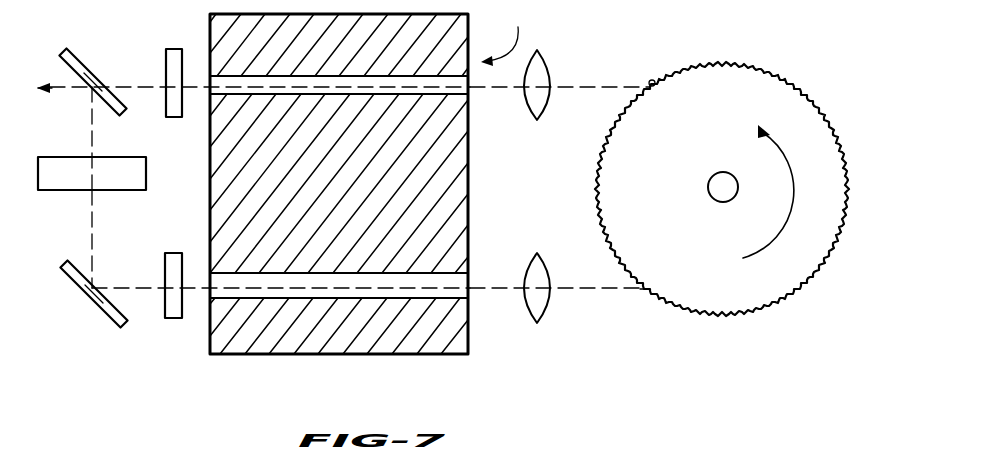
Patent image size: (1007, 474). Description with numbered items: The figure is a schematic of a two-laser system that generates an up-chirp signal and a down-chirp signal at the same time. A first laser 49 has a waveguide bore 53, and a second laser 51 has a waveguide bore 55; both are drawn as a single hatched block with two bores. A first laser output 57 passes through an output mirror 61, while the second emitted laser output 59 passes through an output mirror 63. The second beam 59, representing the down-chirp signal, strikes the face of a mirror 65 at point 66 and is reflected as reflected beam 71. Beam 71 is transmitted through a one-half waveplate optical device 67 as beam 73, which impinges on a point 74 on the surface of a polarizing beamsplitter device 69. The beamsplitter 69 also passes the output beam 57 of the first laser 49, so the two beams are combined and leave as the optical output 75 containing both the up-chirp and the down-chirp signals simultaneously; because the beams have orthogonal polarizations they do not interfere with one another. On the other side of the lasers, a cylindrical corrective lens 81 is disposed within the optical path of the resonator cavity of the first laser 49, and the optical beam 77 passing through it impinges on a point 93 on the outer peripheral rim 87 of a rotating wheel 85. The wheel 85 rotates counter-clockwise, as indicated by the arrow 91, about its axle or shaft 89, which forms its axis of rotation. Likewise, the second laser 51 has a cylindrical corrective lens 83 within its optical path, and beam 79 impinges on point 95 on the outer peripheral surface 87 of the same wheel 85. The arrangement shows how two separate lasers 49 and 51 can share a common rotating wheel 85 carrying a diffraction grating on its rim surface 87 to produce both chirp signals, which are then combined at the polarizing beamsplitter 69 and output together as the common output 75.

The first laser 49 is at (507, 36).
The second laser 51 is at (473, 296).
The waveguide bore 53 is at (380, 76).
The waveguide bore 55 is at (297, 297).
The first laser output 57 is at (133, 86).
The second emitted laser output 59 is at (133, 290).
The output mirror 61 is at (186, 33).
The output mirror 63 is at (182, 318).
The mirror 65 is at (93, 302).
The point 66 is at (94, 284).
The one-half waveplate optical device 67 is at (147, 171).
The polarizing beamsplitter device 69 is at (90, 56).
The reflected beam 71 is at (91, 218).
The beam 73 is at (93, 125).
The point 74 is at (91, 89).
The optical output 75 is at (53, 86).
The optical beam 77 is at (613, 86).
The beam 79 is at (588, 290).
The cylindrical corrective lens 81 is at (543, 53).
The cylindrical corrective lens 83 is at (533, 256).
The rotating wheel 85 is at (722, 188).
The outer peripheral rim 87 is at (761, 67).
The axle or shaft 89 is at (711, 183).
The arrow 91 is at (789, 222).
The point 93 is at (654, 86).
The point 95 is at (642, 290).